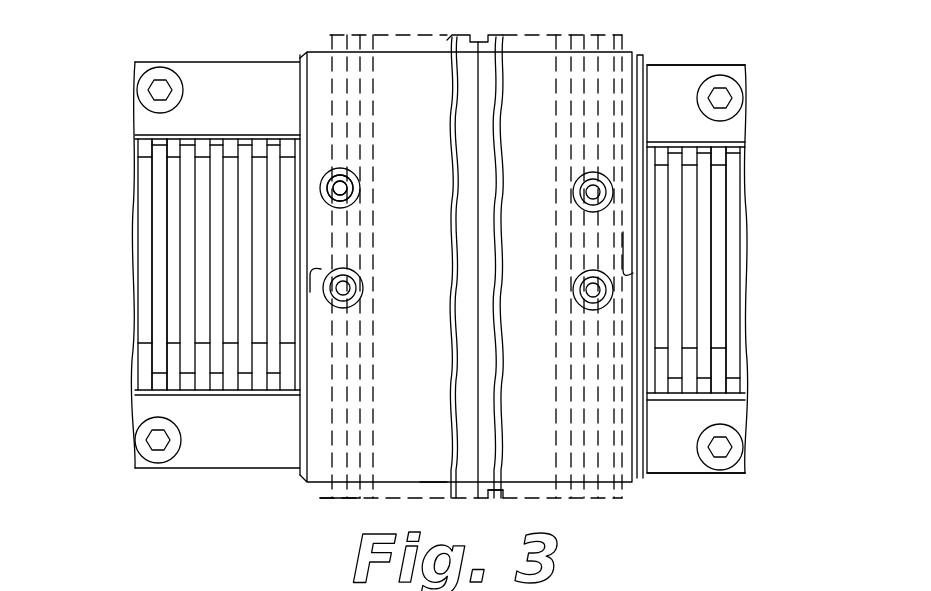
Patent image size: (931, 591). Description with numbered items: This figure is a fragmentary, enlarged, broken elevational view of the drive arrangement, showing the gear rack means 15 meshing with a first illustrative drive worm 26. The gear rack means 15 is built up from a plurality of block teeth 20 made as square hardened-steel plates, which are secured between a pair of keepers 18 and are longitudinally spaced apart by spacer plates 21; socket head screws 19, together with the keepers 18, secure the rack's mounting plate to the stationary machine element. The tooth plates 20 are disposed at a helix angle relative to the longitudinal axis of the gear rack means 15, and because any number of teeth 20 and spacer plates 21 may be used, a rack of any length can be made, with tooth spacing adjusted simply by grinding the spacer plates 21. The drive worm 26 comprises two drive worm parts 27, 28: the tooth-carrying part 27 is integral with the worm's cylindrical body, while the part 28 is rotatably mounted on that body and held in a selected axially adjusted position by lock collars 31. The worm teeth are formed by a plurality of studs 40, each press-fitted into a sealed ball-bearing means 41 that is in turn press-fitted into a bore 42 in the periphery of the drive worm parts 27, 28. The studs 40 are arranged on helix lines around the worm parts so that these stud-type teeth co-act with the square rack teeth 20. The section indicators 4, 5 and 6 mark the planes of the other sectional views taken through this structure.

The gear rack means 15 is at (272, 470).
The keepers 18 is at (672, 77).
The socket head screws 19 is at (152, 92).
The block teeth 20 is at (172, 205).
The spacer plates 21 is at (187, 235).
The drive worm 26 is at (318, 498).
The drive worm part 27 is at (432, 476).
The drive worm part 28 is at (491, 480).
The lock collars 31 is at (637, 60).
The studs 40 is at (362, 192).
The sealed ball-bearing means 41 is at (353, 199).
The bore 42 is at (357, 181).
The section line 4- 4 is at (325, 138).
The section line 5- 5 is at (92, 280).
The section line 6- 6 is at (135, 42).